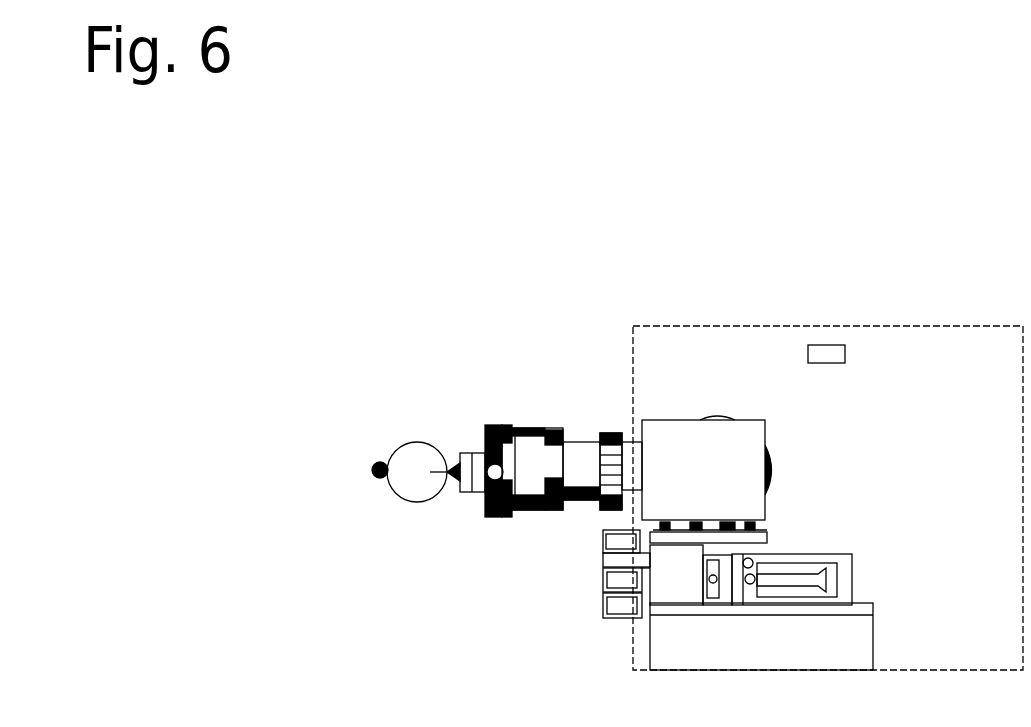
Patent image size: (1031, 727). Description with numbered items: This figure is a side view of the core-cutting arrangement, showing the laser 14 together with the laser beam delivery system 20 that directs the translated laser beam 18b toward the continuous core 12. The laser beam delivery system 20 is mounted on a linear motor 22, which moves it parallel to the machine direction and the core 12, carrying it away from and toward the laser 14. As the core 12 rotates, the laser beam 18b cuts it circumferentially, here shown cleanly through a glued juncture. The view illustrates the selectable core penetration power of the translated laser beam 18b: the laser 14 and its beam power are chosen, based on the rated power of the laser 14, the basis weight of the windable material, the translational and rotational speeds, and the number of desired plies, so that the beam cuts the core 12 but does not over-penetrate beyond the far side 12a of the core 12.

The core 12 is at (413, 441).
The far side of the core 12a is at (329, 470).
The laser 14 is at (967, 391).
The translated laser beam 18b is at (333, 607).
The laser beam delivery system 20 is at (742, 493).
The linear motor 22 is at (854, 659).